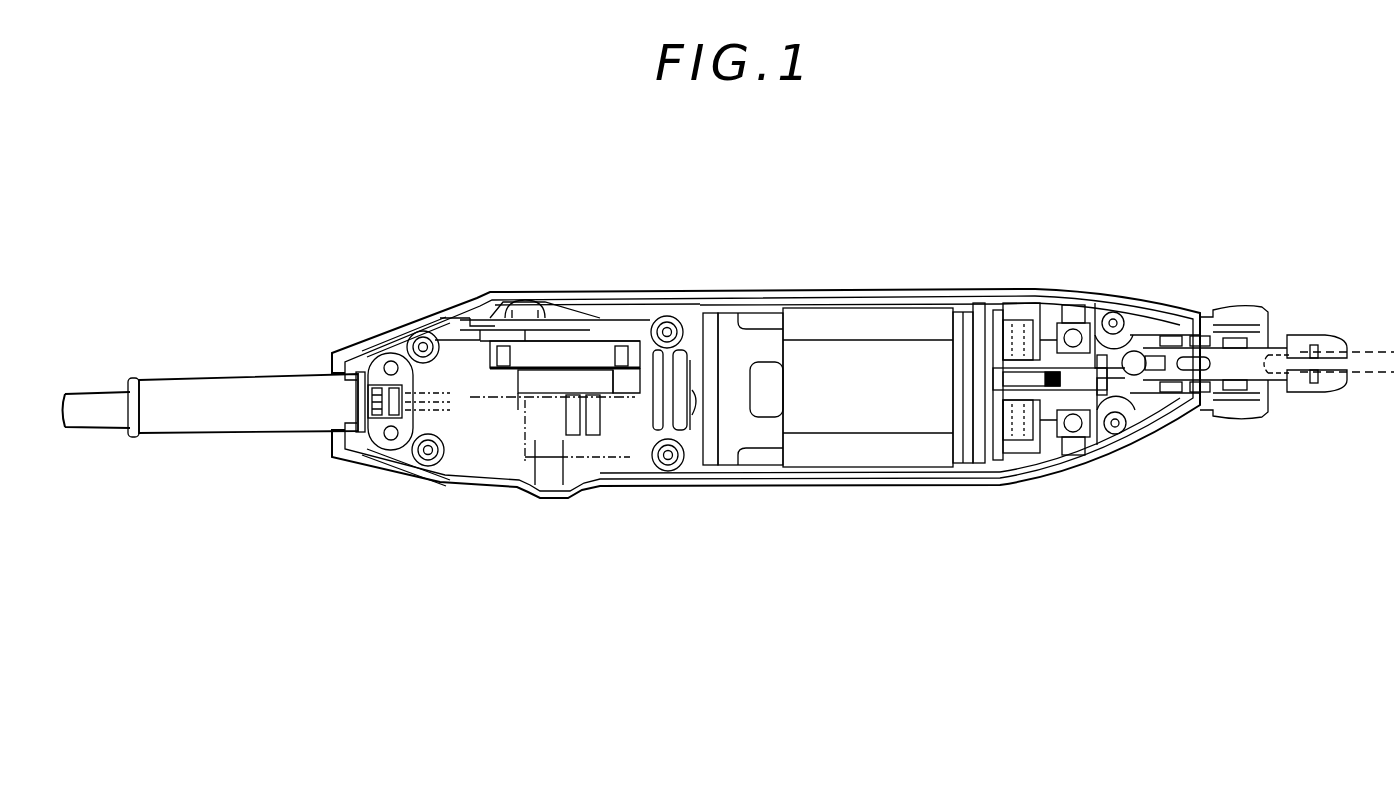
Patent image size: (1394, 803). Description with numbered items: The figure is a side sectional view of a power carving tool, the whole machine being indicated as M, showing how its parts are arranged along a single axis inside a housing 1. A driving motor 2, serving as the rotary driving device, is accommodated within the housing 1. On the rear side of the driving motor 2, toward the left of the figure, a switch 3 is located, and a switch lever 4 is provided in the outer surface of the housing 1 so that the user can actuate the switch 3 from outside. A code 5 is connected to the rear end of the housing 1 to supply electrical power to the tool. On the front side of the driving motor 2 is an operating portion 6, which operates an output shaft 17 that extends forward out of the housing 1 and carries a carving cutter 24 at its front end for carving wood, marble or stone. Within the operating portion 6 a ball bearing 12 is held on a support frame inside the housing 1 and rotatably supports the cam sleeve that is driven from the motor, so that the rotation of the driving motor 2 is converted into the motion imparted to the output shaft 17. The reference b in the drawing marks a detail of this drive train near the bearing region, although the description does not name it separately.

The electric grinder / machine M is at (410, 214).
The housing 1 is at (745, 297).
The driving motor 2 is at (885, 433).
The switch 3 is at (613, 298).
The switch lever 4 is at (528, 298).
The code 5 is at (260, 418).
The operating portion 6 is at (1080, 275).
The ball bearing 12 is at (1088, 437).
The output shaft 17 is at (1252, 365).
The carving cutter 24 is at (1373, 375).
The gear shaft b is at (1043, 410).